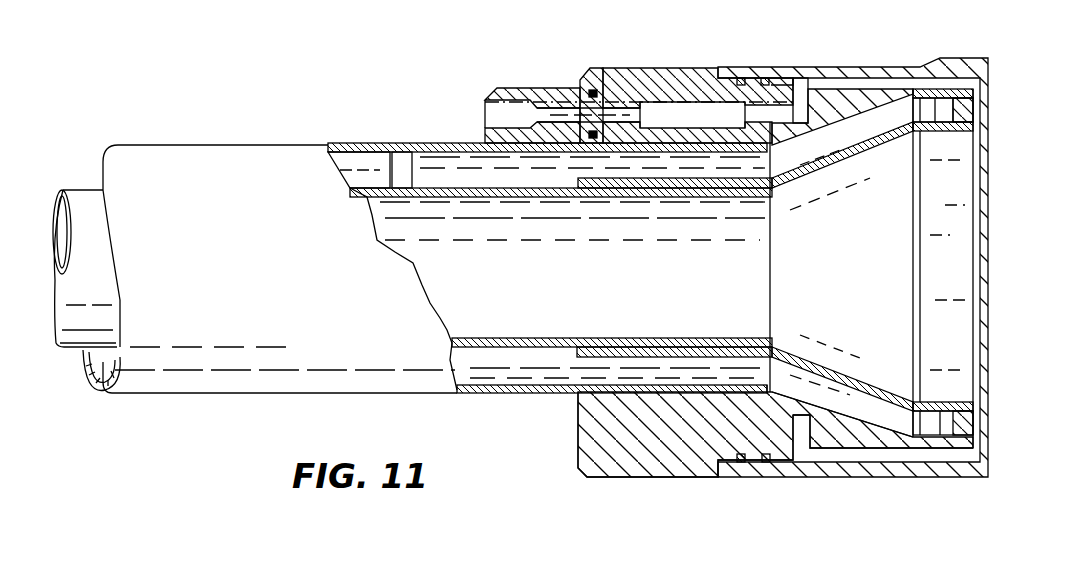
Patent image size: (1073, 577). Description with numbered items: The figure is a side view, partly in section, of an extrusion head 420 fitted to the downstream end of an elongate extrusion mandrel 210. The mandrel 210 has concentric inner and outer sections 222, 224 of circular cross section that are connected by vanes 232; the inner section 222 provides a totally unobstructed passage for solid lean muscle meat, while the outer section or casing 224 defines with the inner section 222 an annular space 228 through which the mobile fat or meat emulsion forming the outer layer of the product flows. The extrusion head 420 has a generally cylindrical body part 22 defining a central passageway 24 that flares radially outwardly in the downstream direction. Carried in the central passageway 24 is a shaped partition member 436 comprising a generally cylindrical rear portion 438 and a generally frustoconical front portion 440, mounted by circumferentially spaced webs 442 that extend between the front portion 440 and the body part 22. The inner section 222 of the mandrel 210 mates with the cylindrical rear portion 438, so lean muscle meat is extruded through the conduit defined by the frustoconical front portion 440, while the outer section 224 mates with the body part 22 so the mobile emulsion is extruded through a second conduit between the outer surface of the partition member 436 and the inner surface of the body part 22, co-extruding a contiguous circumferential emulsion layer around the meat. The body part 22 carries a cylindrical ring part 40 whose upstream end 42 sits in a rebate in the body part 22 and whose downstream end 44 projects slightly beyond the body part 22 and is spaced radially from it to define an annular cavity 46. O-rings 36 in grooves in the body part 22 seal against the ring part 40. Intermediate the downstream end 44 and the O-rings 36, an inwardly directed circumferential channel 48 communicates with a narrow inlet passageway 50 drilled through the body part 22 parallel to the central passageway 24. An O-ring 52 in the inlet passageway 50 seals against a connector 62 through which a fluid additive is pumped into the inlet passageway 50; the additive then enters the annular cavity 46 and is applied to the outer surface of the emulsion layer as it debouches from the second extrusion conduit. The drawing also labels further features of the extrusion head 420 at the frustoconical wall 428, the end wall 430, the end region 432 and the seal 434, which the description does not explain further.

The extrusion mandrel 210 is at (272, 258).
The annular space 228 is at (355, 162).
The vanes 232 is at (401, 162).
The outer section 224 is at (500, 388).
The inner section 222 is at (537, 346).
The rear portion 438 is at (623, 182).
The connector 62 is at (542, 97).
The O-ring 52 is at (597, 90).
The inlet passageway 50 is at (671, 117).
The body part 22 is at (699, 67).
The upstream end 42 is at (745, 78).
The downstream end 44 is at (785, 78).
The circumferential channel 48 is at (790, 110).
The ring part 40 is at (960, 60).
The front portion 440 is at (847, 163).
The conical nozzle 428 is at (843, 373).
The partition member 436 is at (975, 110).
The end wall 430 is at (978, 152).
The end chamber 432 is at (958, 195).
The seal 434 is at (968, 403).
The webs 442 is at (943, 420).
The extrusion head 420 is at (618, 444).
The central passageway 24 is at (684, 393).
The annular cavity 46 is at (840, 456).
The O-rings 36 is at (745, 463).